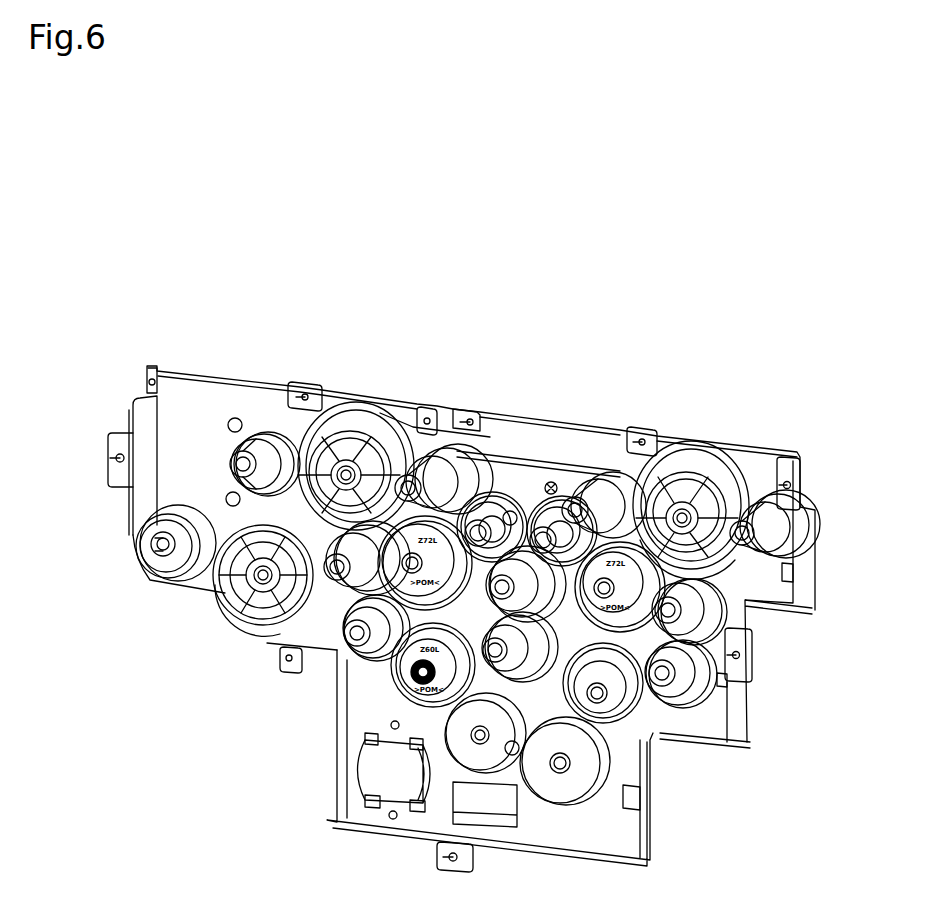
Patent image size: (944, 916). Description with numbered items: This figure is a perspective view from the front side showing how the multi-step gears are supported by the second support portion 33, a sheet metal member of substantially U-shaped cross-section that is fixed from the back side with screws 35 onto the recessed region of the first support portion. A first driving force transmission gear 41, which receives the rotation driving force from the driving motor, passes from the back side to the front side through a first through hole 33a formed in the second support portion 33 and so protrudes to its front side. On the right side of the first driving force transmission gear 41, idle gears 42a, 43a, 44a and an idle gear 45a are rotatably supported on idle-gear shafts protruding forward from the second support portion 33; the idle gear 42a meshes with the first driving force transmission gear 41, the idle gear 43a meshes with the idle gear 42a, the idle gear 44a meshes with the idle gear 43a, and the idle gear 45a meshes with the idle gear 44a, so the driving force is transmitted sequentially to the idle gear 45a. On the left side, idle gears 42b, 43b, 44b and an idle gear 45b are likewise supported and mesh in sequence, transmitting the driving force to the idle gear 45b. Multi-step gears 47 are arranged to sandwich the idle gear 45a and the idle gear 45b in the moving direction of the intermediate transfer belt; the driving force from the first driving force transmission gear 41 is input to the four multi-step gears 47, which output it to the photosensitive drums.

The second support portion 33 is at (201, 393).
The first through hole 33a is at (540, 485).
The screws 35 is at (115, 438).
The first driving force transmission gear 41 is at (553, 482).
The idle gear 42a is at (593, 497).
The idle gear 42b is at (487, 500).
The idle gear 43a is at (622, 665).
The idle gear 43b is at (357, 637).
The idle gear 44a is at (693, 630).
The idle gear 44b is at (282, 648).
The idle gear 45a is at (697, 453).
The idle gear 45b is at (357, 407).
The multi-step gears 47 is at (280, 427).